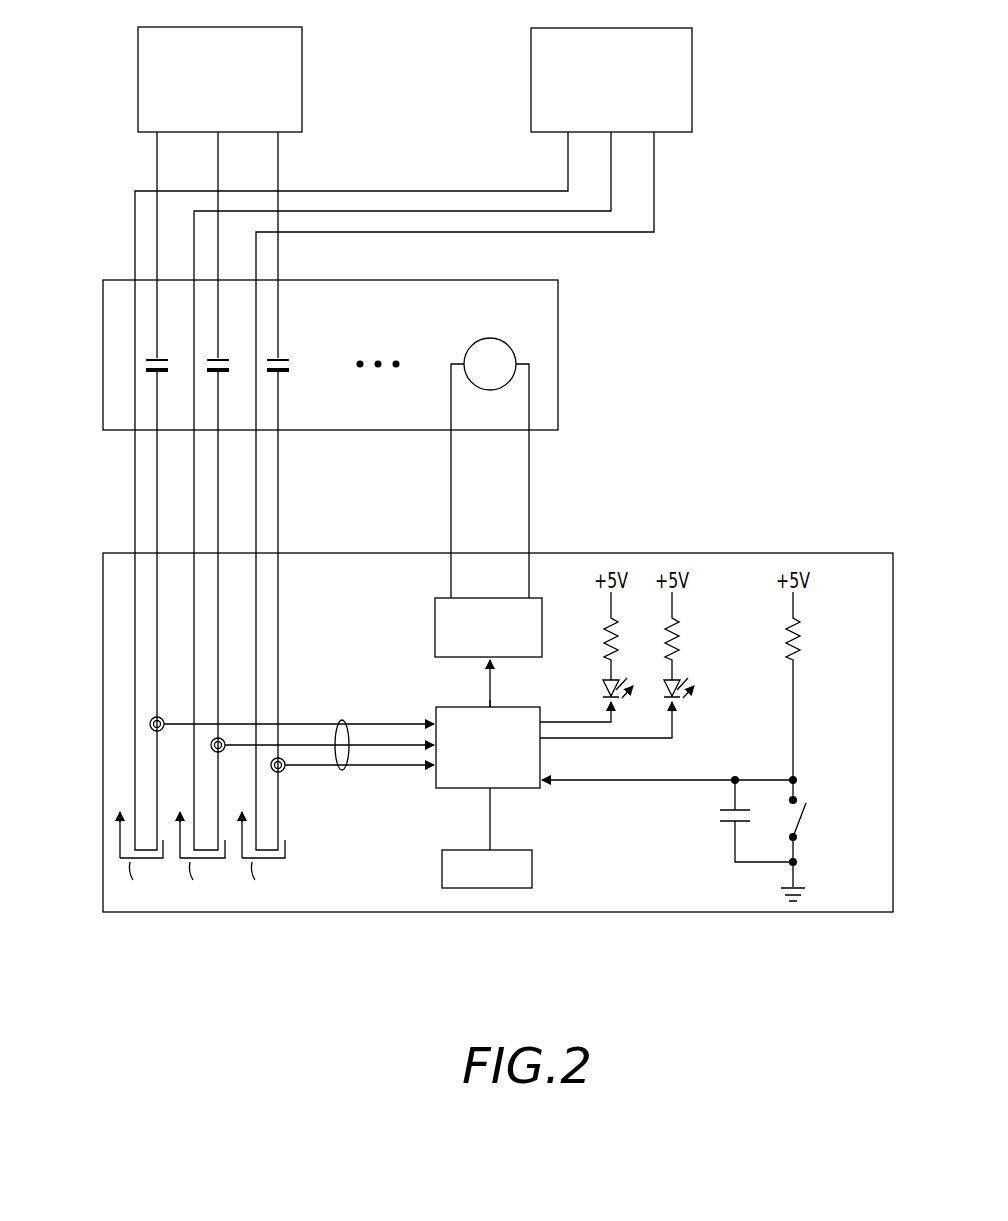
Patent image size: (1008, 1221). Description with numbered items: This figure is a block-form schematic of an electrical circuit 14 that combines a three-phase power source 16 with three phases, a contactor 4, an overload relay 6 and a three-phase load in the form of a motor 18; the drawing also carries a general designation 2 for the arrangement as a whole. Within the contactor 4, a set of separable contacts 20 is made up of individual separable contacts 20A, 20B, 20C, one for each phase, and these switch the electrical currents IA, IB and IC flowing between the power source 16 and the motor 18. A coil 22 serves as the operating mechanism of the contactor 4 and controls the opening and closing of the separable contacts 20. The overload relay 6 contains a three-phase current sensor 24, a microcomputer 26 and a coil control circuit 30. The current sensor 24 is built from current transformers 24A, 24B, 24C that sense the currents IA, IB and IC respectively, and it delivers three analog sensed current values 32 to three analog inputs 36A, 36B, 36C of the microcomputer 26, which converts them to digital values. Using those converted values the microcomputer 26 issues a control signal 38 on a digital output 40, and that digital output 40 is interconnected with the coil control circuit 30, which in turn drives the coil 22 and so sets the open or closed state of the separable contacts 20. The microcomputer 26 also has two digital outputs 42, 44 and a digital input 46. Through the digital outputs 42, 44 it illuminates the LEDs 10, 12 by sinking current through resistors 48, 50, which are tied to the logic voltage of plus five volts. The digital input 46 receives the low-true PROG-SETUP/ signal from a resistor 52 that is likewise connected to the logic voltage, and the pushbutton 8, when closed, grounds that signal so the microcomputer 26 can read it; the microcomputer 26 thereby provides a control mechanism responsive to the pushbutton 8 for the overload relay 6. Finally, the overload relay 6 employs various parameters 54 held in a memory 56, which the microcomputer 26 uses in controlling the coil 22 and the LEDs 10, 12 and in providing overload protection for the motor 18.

The motor control system 2 is at (692, 498).
The contactor 4 is at (558, 297).
The overload relay 6 is at (865, 553).
The pushbutton 8 is at (803, 820).
The LED 10 is at (605, 681).
The LED 12 is at (681, 697).
The electrical circuit 14 is at (210, 936).
The three-phase power source 16 is at (283, 27).
The motor 18 is at (650, 28).
The separable contacts 20 is at (192, 351).
The separable contact 20A is at (150, 372).
The separable contact 20B is at (250, 357).
The separable contact 20C is at (285, 374).
The coil 22 is at (474, 344).
The three-phase current sensor 24 is at (194, 729).
The current transformer 24A is at (148, 733).
The current transformer 24B is at (224, 737).
The current transformer 24C is at (283, 772).
The microcomputer 26 is at (503, 788).
The coil control circuit 30 is at (435, 607).
The analog sensed current values 32 is at (346, 722).
The analog input 36A is at (433, 721).
The analog input 36B is at (430, 768).
The analog input 36C is at (437, 778).
The control signal 38 is at (489, 687).
The digital output 40 is at (489, 707).
The digital output 42 is at (544, 722).
The digital output 44 is at (543, 739).
The digital input 46 is at (543, 782).
The resistor 48 is at (606, 622).
The resistor 50 is at (679, 629).
The resistor 52 is at (800, 632).
The parameters 54 is at (552, 870).
The memory 56 is at (442, 866).